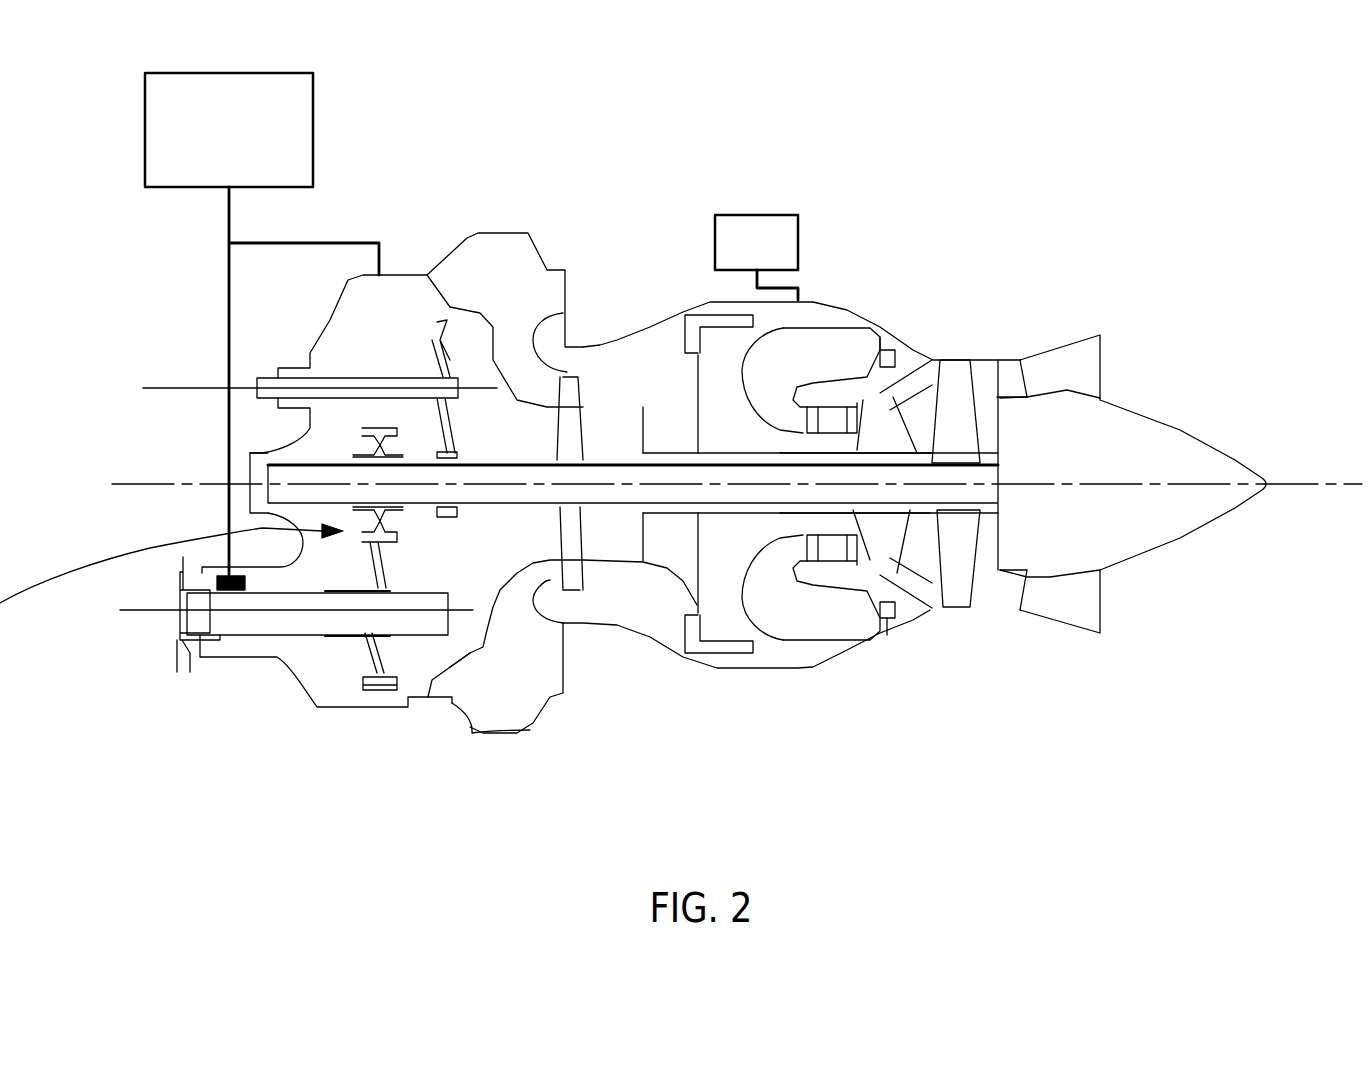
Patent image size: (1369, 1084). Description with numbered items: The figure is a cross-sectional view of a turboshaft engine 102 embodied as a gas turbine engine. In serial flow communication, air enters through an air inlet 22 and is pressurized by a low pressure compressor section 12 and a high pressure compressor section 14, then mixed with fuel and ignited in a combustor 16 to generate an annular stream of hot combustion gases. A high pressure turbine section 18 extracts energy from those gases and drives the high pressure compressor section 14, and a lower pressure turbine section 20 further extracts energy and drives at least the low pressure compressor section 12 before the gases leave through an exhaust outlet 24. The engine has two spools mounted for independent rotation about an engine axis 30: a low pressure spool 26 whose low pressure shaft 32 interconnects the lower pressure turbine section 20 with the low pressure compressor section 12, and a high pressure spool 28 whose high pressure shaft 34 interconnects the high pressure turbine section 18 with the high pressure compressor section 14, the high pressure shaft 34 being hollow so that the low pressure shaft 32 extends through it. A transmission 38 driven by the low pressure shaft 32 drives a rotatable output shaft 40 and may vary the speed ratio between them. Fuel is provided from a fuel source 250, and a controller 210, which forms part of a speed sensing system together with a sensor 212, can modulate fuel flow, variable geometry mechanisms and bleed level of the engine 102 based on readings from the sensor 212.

The low pressure compressor section 12 is at (570, 393).
The high pressure compressor section 14 is at (673, 420).
The combustor 16 is at (825, 363).
The high pressure turbine section 18 is at (880, 540).
The lower pressure turbine section 20 is at (957, 383).
The air inlet 22 is at (472, 707).
The exhaust outlet 24 is at (1083, 607).
The low pressure spool 26 is at (607, 503).
The high pressure spool 28 is at (717, 513).
The engine axis 30 is at (1332, 484).
The low pressure shaft 32 is at (500, 500).
The high pressure shaft 34 is at (785, 498).
The transmission 38 is at (170, 536).
The output shaft 40 is at (247, 620).
The turboshaft engine 102 is at (1068, 255).
The controller 210 is at (202, 168).
The sensor 212 is at (217, 582).
The fuel source 250 is at (784, 258).